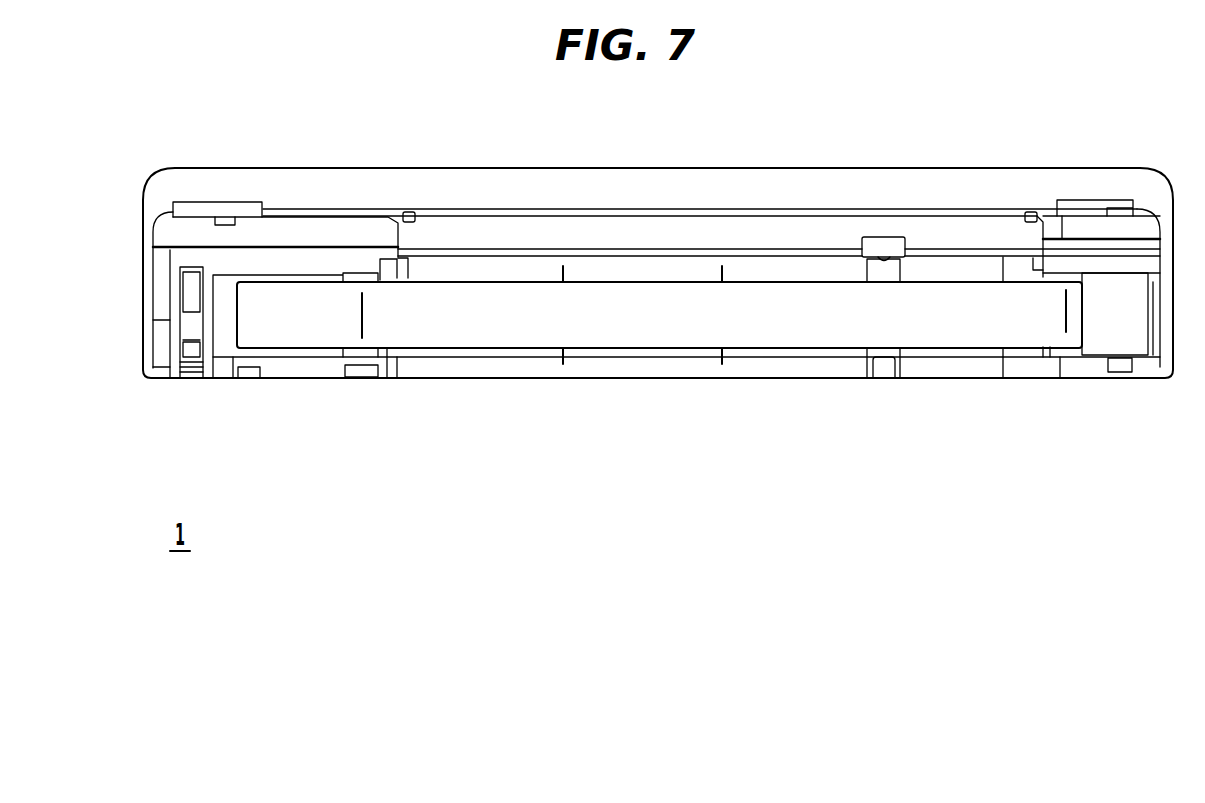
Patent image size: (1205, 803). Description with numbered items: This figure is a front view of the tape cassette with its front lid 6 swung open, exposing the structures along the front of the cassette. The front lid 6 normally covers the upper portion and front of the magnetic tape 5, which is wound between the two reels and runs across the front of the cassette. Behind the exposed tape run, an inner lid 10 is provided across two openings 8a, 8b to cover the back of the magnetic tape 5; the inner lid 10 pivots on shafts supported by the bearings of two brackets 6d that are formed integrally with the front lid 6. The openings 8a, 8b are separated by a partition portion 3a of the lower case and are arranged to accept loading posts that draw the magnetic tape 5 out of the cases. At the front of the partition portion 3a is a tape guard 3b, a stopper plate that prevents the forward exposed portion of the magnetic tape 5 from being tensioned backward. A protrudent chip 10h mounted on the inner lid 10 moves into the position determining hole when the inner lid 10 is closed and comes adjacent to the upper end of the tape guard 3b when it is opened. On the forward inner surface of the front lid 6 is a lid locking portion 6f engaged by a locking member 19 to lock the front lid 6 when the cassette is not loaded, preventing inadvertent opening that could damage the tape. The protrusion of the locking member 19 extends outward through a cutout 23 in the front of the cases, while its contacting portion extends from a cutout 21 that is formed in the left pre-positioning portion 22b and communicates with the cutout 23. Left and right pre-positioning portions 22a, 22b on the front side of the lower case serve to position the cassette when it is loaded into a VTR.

The front lid 6 is at (938, 174).
The lid locking portion 6f is at (221, 222).
The brackets 6d is at (411, 215).
The inner lid 10 is at (643, 231).
The protrudent chip 10h is at (883, 257).
The tape guard 3b is at (872, 266).
The partition portion 3a is at (890, 364).
The magnetic tape 5 is at (438, 330).
The opening 8b is at (634, 362).
The opening 8a is at (953, 362).
The pre-positioning portion 22a is at (1082, 362).
The pre-positioning portion 22b is at (178, 379).
The locking member 19 is at (188, 302).
The cutout 23 is at (188, 353).
The cutout 21 is at (193, 380).